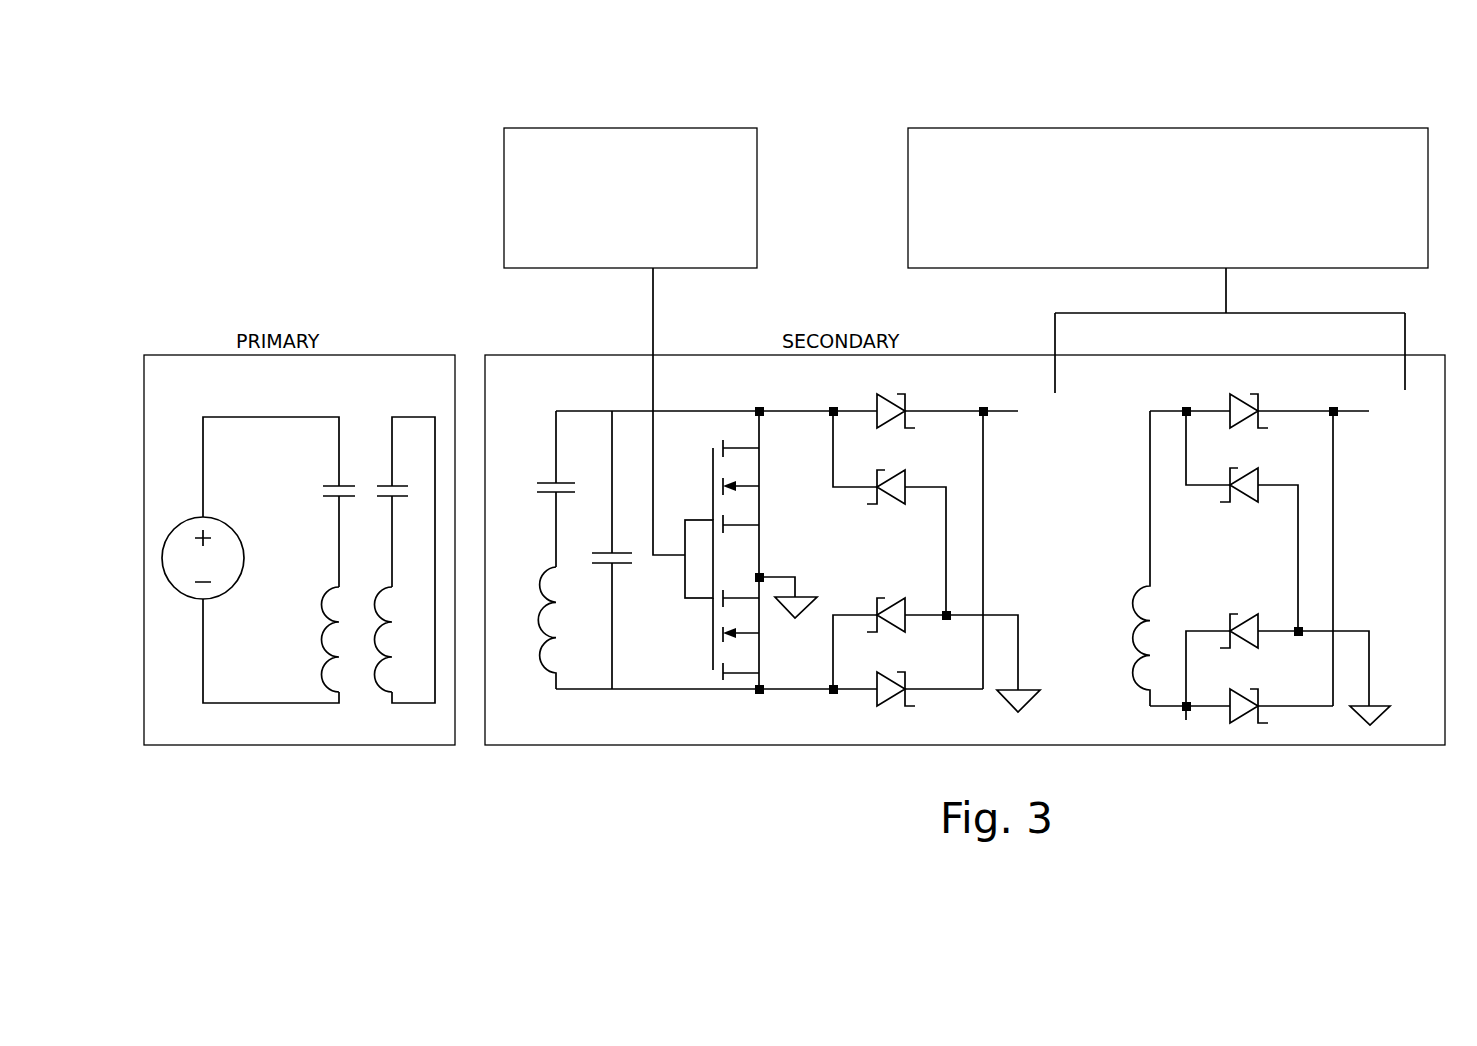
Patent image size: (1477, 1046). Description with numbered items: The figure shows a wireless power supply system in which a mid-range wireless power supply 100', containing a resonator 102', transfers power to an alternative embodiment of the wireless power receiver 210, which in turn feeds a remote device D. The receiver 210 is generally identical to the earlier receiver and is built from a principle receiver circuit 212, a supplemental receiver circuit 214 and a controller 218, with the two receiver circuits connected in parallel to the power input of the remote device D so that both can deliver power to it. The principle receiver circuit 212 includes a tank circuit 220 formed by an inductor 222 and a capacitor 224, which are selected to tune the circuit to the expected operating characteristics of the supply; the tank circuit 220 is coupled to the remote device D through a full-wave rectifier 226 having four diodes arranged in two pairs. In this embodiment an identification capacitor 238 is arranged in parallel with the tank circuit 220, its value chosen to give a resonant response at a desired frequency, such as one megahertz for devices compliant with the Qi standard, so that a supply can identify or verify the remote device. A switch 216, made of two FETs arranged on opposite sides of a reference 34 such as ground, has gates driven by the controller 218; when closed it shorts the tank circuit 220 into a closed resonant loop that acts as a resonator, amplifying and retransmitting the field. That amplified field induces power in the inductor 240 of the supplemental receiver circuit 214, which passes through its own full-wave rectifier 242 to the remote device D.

The mid-range wireless power supply 100' is at (299, 472).
The resonator 102' is at (298, 627).
The wireless power receiver 210 is at (849, 103).
The principle receiver circuit 212 is at (805, 705).
The supplemental receiver circuit 214 is at (1296, 723).
The switch 216 is at (700, 482).
The controller 218 is at (695, 128).
The tank circuit 220 is at (545, 552).
The inductor 222 is at (538, 580).
The capacitor 224 is at (535, 486).
The full-wave rectifier 226 is at (920, 398).
The identification capacitor 238 is at (612, 617).
The inductor 240 is at (1132, 586).
The full-wave rectifier 242 is at (1272, 398).
The reference 34 is at (803, 593).
The remote device D is at (1167, 128).